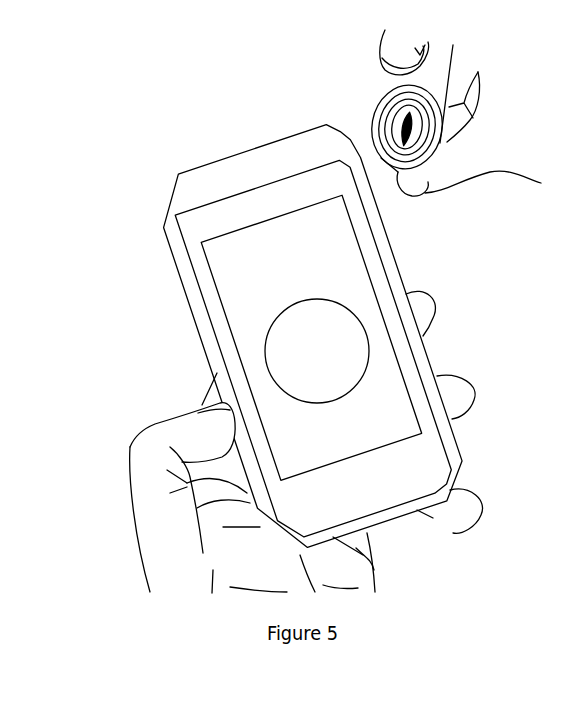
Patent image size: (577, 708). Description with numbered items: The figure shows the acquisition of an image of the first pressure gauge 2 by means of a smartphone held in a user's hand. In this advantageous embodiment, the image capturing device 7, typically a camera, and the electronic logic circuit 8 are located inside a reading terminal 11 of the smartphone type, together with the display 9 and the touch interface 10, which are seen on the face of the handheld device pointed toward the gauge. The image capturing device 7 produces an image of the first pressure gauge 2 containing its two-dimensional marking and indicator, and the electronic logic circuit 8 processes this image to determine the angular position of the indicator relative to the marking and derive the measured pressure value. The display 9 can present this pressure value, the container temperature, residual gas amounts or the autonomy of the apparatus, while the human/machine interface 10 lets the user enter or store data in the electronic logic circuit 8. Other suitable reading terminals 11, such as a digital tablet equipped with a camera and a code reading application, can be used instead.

The first pressure gauge 2 is at (375, 112).
The image capturing device 7 is at (347, 325).
The electronic logic circuit 8 is at (413, 373).
The display 9 is at (235, 342).
The human/machine interface 10 is at (252, 310).
The reading terminal 11 is at (292, 342).